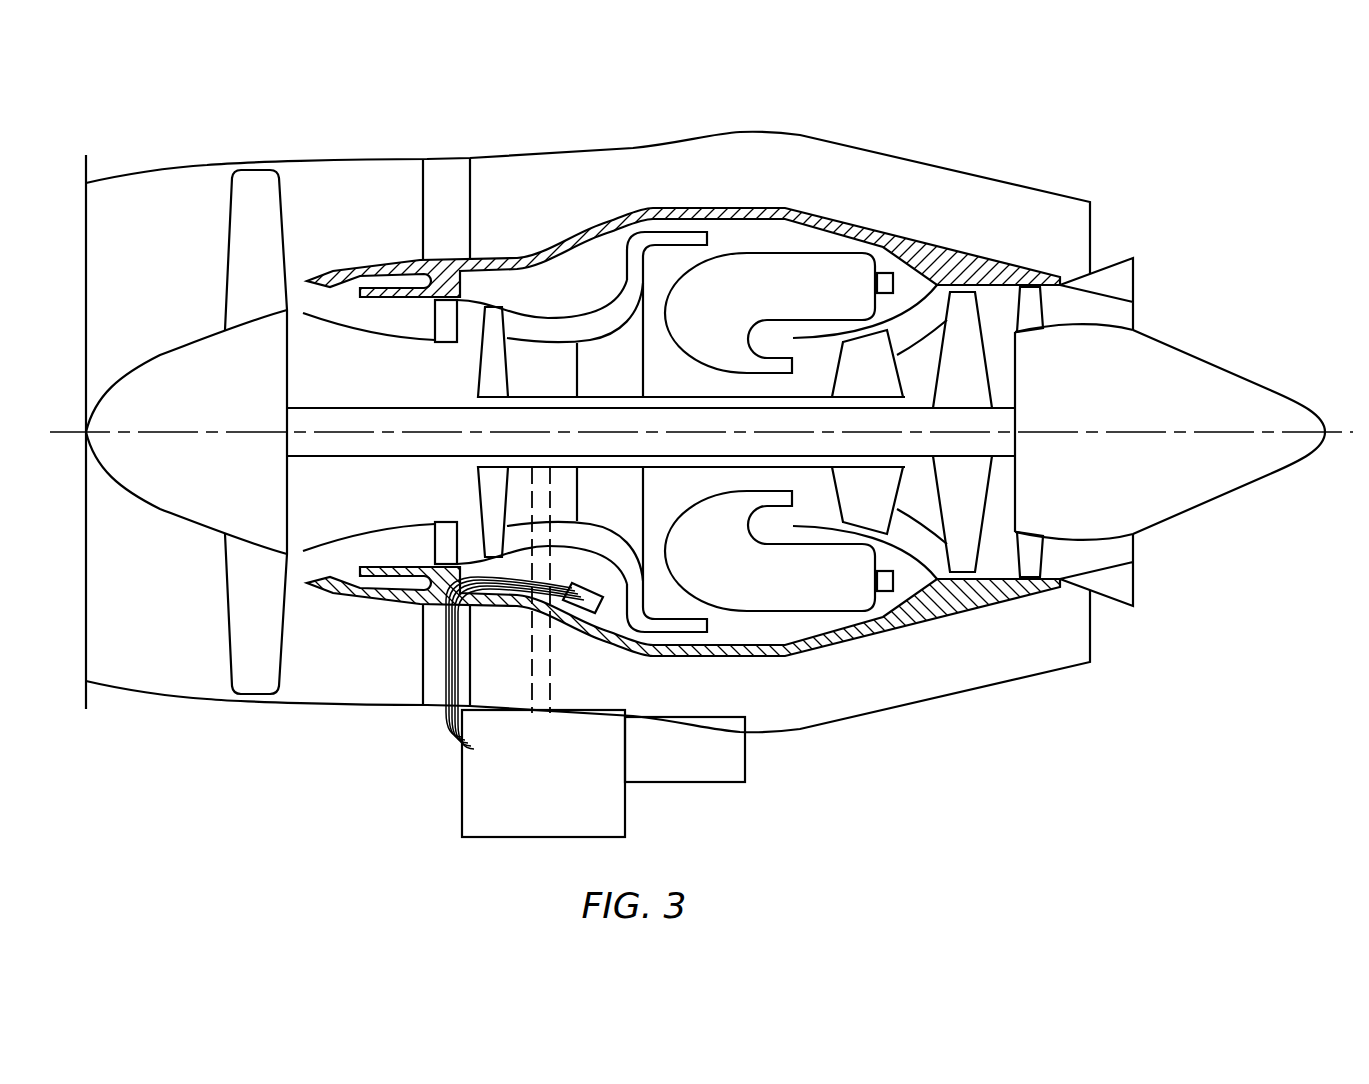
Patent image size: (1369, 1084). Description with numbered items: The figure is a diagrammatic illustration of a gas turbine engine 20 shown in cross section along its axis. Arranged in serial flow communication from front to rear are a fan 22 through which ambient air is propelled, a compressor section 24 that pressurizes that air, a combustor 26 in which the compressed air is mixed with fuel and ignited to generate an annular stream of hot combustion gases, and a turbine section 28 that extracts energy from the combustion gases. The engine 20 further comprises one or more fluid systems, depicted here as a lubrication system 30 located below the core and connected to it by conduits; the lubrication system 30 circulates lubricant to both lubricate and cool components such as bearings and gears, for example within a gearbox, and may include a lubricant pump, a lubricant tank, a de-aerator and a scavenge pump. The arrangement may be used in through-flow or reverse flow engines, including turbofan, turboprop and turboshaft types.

The gas turbine engine 20 is at (1120, 152).
The fan 22 is at (223, 597).
The compressor section 24 is at (537, 320).
The combustor 26 is at (790, 267).
The turbine section 28 is at (918, 505).
The lubrication system 30 is at (416, 752).